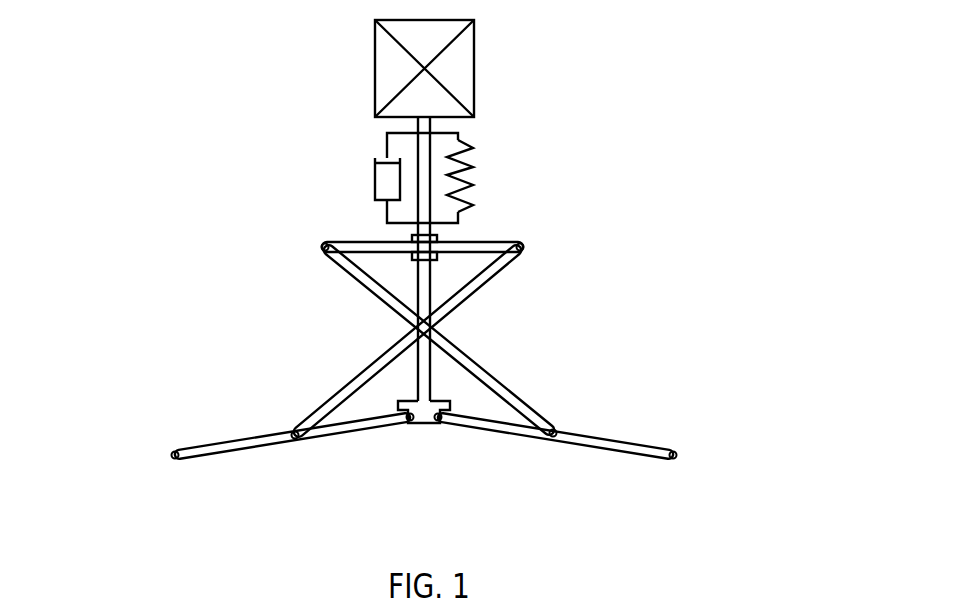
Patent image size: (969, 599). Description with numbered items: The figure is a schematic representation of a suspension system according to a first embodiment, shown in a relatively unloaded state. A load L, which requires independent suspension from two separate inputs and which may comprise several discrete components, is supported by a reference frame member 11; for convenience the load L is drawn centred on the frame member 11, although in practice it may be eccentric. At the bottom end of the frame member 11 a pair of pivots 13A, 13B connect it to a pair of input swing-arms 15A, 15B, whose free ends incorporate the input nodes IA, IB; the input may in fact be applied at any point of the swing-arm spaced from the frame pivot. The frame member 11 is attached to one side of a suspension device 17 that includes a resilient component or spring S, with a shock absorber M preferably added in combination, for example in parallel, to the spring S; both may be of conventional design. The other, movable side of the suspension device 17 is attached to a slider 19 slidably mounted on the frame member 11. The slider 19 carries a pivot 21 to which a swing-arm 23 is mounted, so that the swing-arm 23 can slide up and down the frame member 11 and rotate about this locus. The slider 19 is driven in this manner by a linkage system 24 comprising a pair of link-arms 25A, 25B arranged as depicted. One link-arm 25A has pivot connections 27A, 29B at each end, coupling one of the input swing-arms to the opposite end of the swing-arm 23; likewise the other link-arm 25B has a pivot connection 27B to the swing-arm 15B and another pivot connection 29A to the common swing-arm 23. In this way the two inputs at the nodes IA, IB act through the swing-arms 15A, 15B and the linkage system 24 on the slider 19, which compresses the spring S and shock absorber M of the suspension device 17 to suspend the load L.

The load L is at (455, 69).
The suspension device 17 is at (366, 141).
The shock absorber M is at (387, 182).
The spring S is at (475, 169).
The reference frame member 11 is at (422, 378).
The slider 19 is at (432, 237).
The pivot 21 is at (413, 251).
The swing-arm 23 is at (467, 251).
The link-arm 25B is at (386, 303).
The link-arm 25A is at (459, 301).
The pivot connection 29B is at (318, 245).
The pivot A 29A is at (525, 248).
The pivot connection 27A is at (293, 433).
The pivot connection 27B is at (555, 432).
The input swing-arm 15A is at (220, 451).
The input swing-arm 15B is at (622, 448).
The pivot 13A is at (407, 424).
The pivot 13B is at (441, 424).
The input node IA is at (170, 452).
The input node IB is at (678, 455).
The linkage system 24 is at (674, 320).